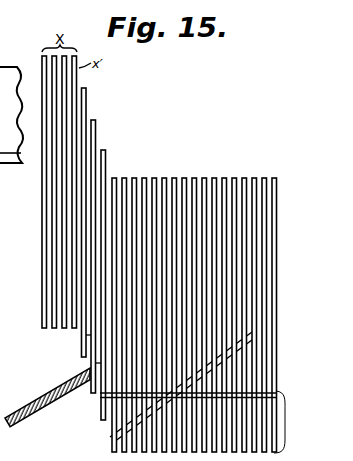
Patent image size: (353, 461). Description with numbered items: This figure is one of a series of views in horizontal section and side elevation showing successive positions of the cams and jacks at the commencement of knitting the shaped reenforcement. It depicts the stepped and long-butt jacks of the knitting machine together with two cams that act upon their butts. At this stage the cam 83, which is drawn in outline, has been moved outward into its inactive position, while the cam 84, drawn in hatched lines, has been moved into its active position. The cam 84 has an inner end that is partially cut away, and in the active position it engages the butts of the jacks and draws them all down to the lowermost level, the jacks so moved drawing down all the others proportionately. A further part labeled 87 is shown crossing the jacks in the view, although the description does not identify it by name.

The cam 83 is at (112, 436).
The cam 84 is at (44, 394).
The horizontal rod 87 is at (142, 407).